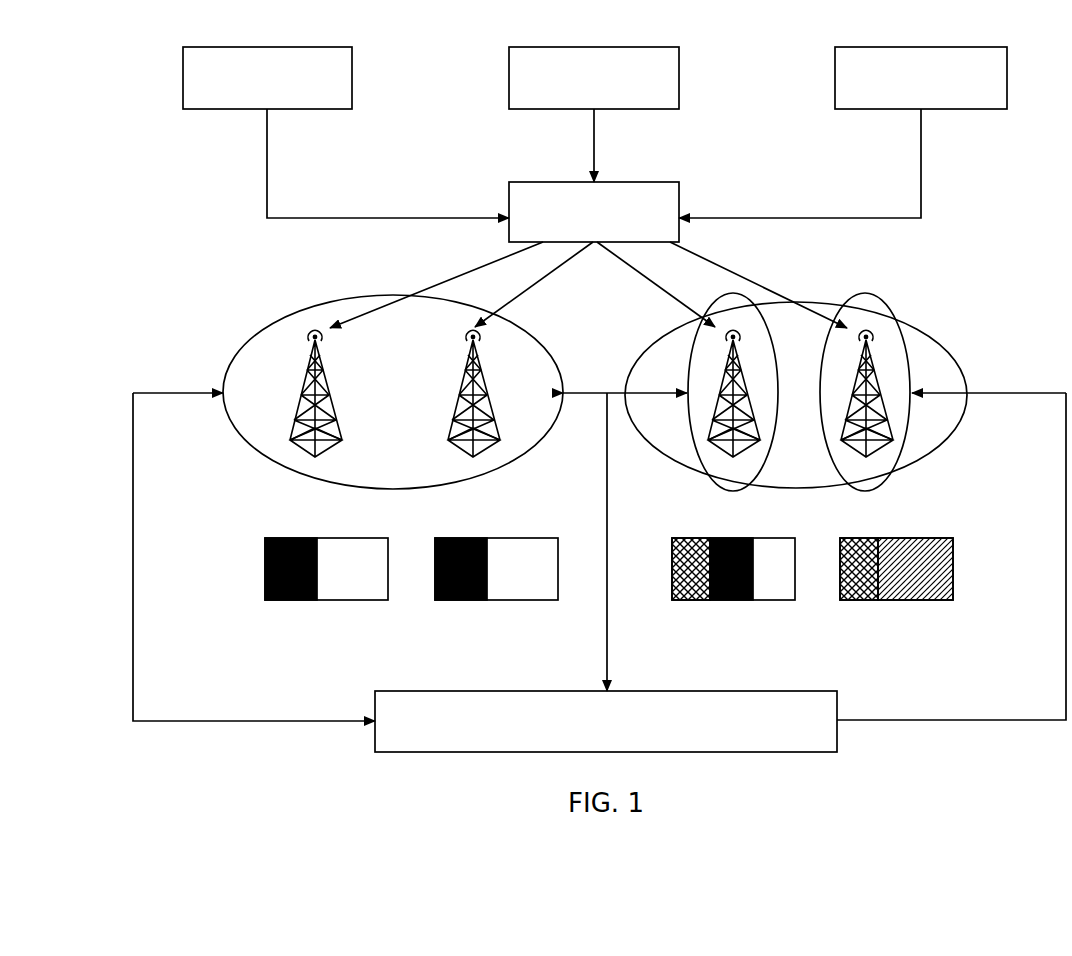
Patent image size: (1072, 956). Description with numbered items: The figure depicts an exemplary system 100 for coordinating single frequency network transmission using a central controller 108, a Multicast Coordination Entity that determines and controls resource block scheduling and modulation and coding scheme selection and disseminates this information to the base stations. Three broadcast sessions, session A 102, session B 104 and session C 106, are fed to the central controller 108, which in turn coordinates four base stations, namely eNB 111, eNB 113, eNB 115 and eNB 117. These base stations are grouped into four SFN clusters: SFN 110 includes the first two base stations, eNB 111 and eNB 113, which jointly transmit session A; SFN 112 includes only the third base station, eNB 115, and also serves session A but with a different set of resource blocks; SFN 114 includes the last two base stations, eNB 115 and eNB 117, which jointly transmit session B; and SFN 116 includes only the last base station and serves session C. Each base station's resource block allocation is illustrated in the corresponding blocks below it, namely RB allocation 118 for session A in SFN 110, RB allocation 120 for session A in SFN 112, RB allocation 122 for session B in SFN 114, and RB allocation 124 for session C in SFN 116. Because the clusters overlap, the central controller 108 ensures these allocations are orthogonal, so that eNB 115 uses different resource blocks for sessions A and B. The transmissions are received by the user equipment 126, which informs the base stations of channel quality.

The system 100 is at (1045, 132).
The session A 102 is at (346, 132).
The session B 104 is at (594, 114).
The session C 106 is at (843, 132).
The central controller 108 is at (588, 255).
The SFN 110 is at (283, 313).
The eNB 111 is at (343, 431).
The SFN 112 is at (690, 352).
The eNB 113 is at (452, 396).
The SFN 114 is at (714, 297).
The eNB 115 is at (760, 432).
The SFN 116 is at (850, 295).
The eNB 117 is at (880, 338).
The RB allocation 118 is at (305, 602).
The RB allocation 120 is at (463, 602).
The RB allocation 122 is at (757, 605).
The RB allocation 124 is at (908, 605).
The user equipment 126 is at (606, 721).